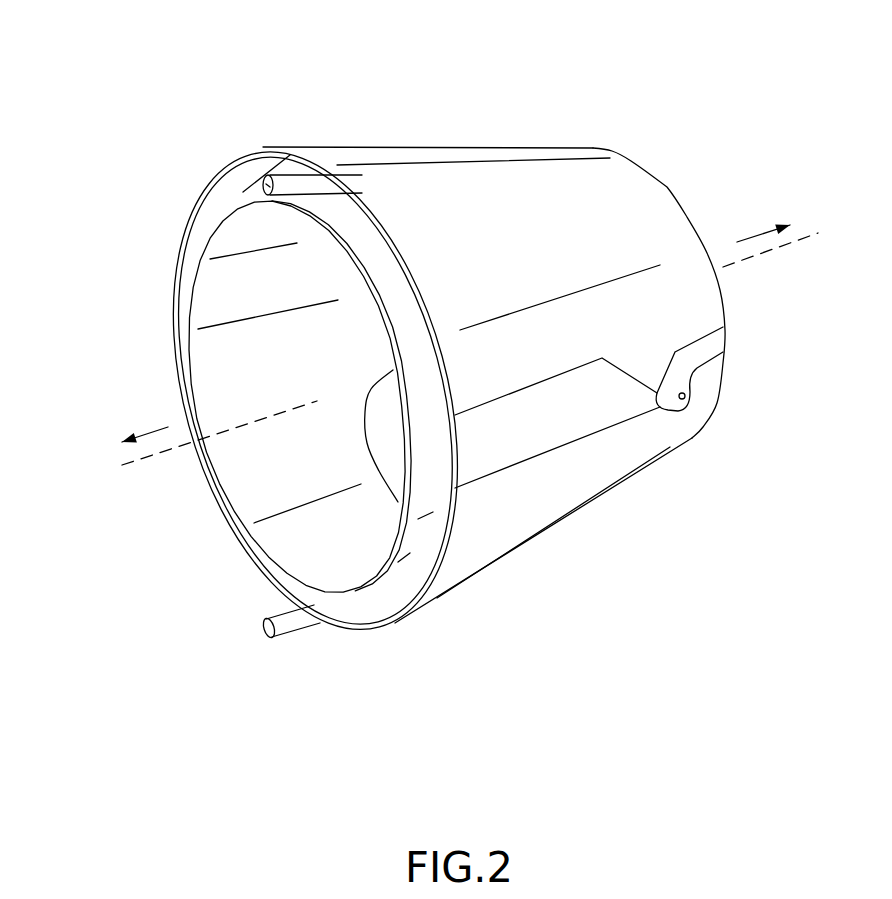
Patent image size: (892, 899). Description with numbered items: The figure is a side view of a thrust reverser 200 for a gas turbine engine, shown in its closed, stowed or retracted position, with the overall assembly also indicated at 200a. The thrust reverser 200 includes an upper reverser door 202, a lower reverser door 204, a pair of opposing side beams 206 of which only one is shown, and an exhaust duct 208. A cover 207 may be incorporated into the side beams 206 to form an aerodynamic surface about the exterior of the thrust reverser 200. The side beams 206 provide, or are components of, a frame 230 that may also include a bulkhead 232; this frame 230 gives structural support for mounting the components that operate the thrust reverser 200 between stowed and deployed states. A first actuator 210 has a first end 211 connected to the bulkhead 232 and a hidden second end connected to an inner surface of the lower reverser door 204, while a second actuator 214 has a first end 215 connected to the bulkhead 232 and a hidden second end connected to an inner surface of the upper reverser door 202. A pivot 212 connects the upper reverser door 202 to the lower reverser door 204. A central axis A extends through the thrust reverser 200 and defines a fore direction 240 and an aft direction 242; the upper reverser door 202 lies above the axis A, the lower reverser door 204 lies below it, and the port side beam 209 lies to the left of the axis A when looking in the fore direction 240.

The thrust reverser 200 is at (92, 110).
The housing body 200a is at (715, 103).
The upper reverser door 202 is at (474, 147).
The lower reverser door 204 is at (530, 547).
The opposing side beams 206 is at (567, 417).
The cover 207 is at (537, 447).
The exhaust duct 208 is at (720, 294).
The port side beam 209 is at (488, 457).
The first actuator 210 is at (281, 632).
The first end of first actuator 211 is at (262, 630).
The pivot 212 is at (686, 398).
The second actuator 214 is at (283, 183).
The first end of second actuator 215 is at (266, 184).
The frame 230 is at (384, 612).
The bulkhead 232 is at (352, 622).
The fore direction 240 is at (152, 428).
The aft direction 242 is at (752, 237).
The central axis A is at (150, 457).